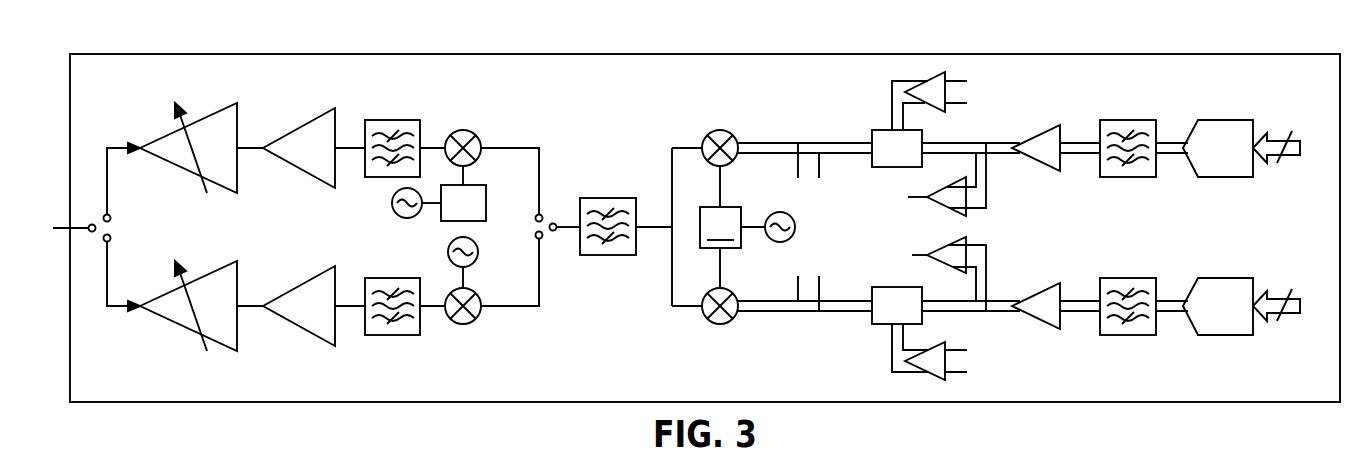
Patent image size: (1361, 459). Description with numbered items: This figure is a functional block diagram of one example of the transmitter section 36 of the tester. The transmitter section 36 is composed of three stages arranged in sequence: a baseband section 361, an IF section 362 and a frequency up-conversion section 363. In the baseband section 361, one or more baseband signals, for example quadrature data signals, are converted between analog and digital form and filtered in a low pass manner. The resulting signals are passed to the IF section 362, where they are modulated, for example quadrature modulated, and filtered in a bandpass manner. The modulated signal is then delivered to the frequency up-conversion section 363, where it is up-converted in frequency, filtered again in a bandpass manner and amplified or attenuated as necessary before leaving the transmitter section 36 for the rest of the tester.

The transmitter section 36 is at (870, 53).
The baseband section 361 is at (1142, 238).
The IF section 362 is at (866, 238).
The frequency up-conversion section 363 is at (310, 243).